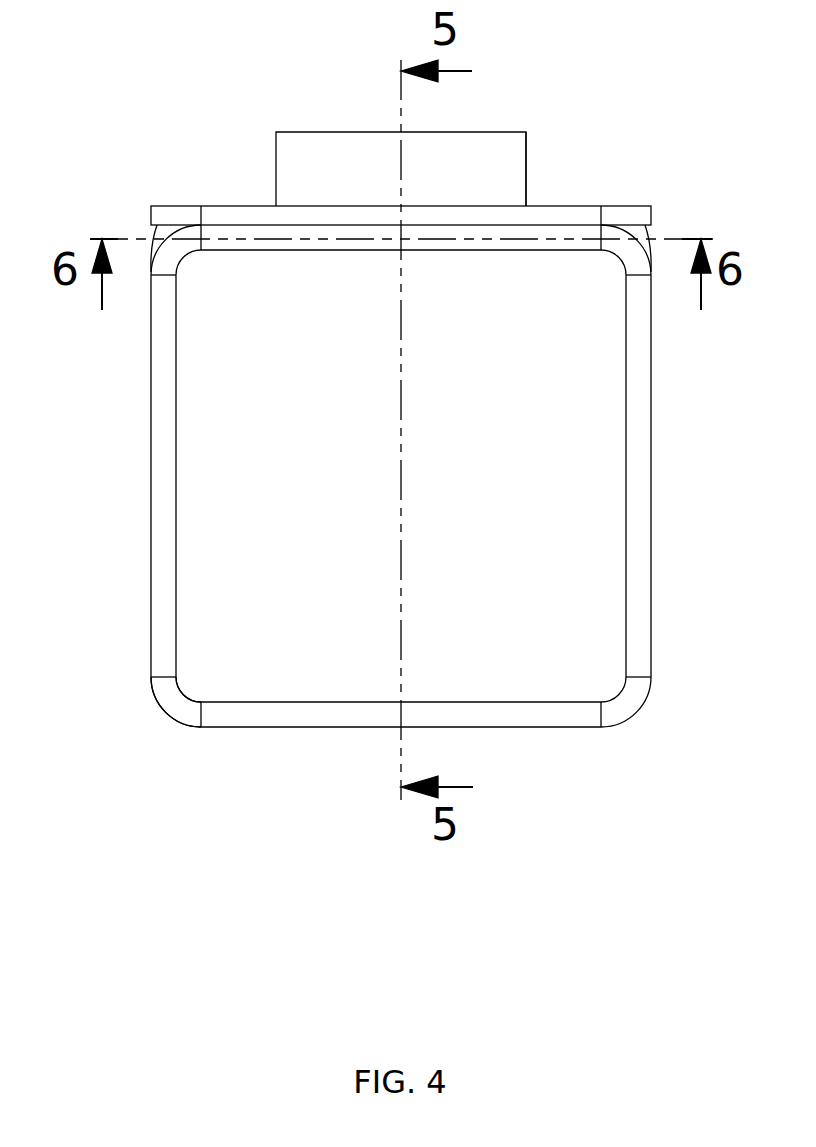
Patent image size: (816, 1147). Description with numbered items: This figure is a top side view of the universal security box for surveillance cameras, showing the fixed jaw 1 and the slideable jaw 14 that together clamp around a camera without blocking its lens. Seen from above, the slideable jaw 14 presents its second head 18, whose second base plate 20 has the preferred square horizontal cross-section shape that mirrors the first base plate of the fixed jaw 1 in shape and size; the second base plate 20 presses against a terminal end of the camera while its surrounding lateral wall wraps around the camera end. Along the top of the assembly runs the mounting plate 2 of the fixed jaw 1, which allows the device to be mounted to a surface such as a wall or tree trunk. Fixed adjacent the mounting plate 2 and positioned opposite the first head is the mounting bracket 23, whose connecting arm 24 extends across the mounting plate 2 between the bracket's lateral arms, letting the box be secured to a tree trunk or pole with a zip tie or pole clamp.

The fixed jaw 1 is at (146, 212).
The mounting plate 2 is at (645, 213).
The slideable jaw 14 is at (138, 668).
The second head 18 is at (170, 716).
The second base plate 20 is at (605, 687).
The mounting bracket 23 is at (538, 173).
The connecting arm 24 is at (505, 137).